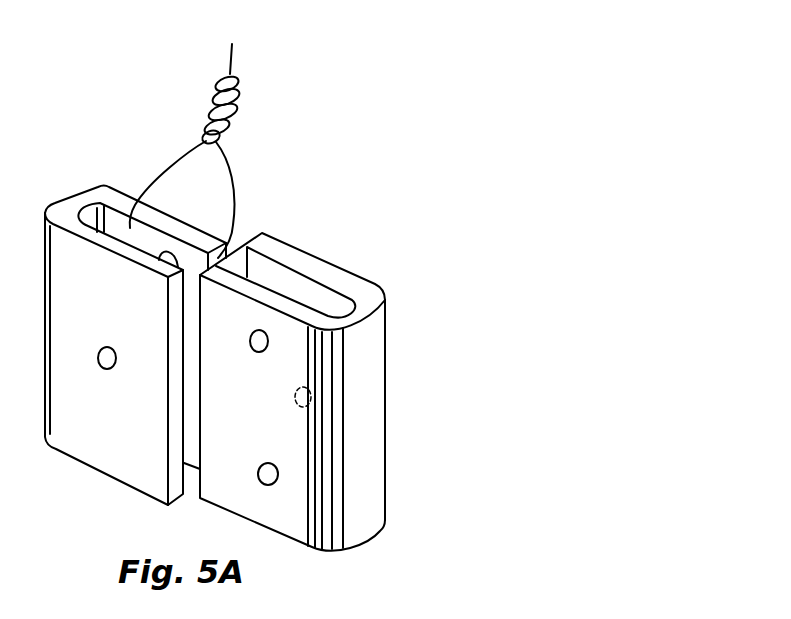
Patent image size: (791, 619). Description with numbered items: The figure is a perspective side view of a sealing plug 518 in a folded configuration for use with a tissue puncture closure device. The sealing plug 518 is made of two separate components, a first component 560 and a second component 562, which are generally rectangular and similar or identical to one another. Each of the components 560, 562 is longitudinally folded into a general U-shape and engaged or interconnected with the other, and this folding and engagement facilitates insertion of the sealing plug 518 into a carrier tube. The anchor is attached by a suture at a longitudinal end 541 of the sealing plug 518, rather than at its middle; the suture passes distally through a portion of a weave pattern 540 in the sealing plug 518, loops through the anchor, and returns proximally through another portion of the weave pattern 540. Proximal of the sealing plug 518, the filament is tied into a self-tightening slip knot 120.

The self-tightening slip knot 120 is at (243, 100).
The sealing plug 518 is at (336, 359).
The first component 560 is at (87, 184).
The second component 562 is at (367, 397).
The weave pattern 540 is at (280, 475).
The longitudinal end 541 is at (312, 466).